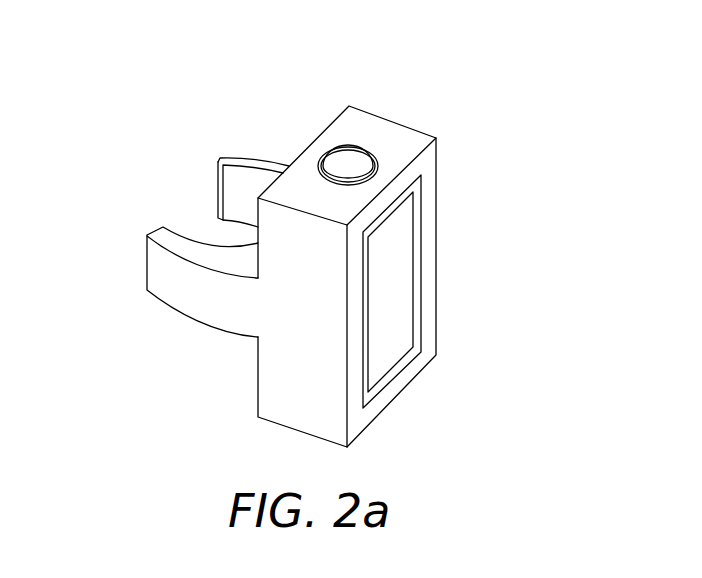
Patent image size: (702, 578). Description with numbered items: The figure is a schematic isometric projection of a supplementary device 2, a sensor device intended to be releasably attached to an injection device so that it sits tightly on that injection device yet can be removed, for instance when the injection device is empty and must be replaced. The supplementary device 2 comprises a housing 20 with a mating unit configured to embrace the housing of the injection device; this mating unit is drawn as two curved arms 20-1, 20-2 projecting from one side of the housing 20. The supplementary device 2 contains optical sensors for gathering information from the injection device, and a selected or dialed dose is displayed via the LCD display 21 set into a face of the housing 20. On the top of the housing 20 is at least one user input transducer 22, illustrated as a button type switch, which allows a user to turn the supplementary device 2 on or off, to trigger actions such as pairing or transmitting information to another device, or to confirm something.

The supplementary device 2 is at (445, 104).
The housing 20 is at (302, 418).
The lower mounting arm 20-1 is at (157, 222).
The upper mounting arm 20-2 is at (227, 162).
The LCD display 21 is at (407, 262).
The user input transducer 22 is at (348, 152).